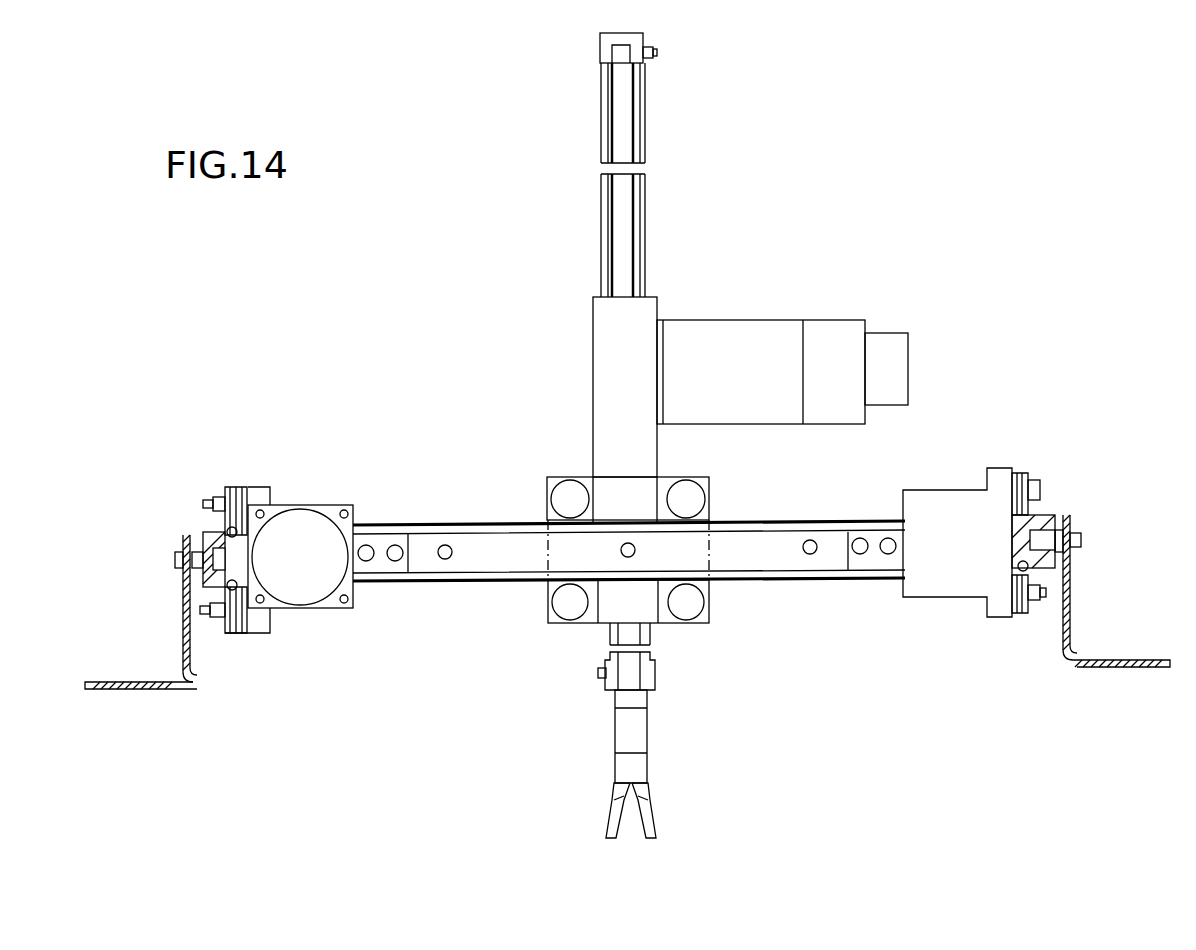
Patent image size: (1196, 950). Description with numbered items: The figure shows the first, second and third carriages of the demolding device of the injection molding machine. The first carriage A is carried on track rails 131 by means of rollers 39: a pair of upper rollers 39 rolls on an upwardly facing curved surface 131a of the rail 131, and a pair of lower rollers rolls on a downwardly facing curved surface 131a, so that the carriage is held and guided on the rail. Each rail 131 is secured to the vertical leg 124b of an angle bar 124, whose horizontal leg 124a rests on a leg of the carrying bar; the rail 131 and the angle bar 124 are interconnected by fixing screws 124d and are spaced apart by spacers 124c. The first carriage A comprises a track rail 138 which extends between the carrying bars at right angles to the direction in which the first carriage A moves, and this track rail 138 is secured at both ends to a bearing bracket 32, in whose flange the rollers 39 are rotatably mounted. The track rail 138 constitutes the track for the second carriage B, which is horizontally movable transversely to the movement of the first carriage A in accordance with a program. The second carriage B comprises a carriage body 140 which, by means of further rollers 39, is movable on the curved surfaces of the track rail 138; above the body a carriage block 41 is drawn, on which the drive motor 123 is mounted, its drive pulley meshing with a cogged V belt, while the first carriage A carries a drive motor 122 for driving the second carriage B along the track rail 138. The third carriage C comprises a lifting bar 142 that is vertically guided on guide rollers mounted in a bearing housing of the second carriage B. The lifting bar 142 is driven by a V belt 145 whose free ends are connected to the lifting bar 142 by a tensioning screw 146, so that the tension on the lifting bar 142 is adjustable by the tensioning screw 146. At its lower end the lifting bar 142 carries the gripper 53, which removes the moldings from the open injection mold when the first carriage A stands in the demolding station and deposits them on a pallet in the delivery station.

The tensioning screw 146 is at (657, 52).
The V belt 145 is at (622, 102).
The lifting bar 142 is at (637, 143).
The drive motor 123 is at (786, 345).
The carriage block 41 is at (641, 510).
The track rail 138 is at (440, 515).
The carriage body 140 is at (547, 590).
The rollers 39 is at (655, 622).
The gripper 53 is at (628, 720).
The drive motor 122 is at (304, 597).
The bearing bracket 32 is at (330, 505).
The track rail 131 is at (226, 530).
The curved surface 131a is at (247, 488).
The angle bar 124 is at (634, 610).
The horizontal leg 124a is at (165, 690).
The vertical leg 124b is at (192, 660).
The spacer 124c is at (193, 557).
The fixing screw 124d is at (1081, 540).
The first carriage A is at (458, 585).
The second carriage B is at (543, 488).
The third carriage C is at (647, 136).